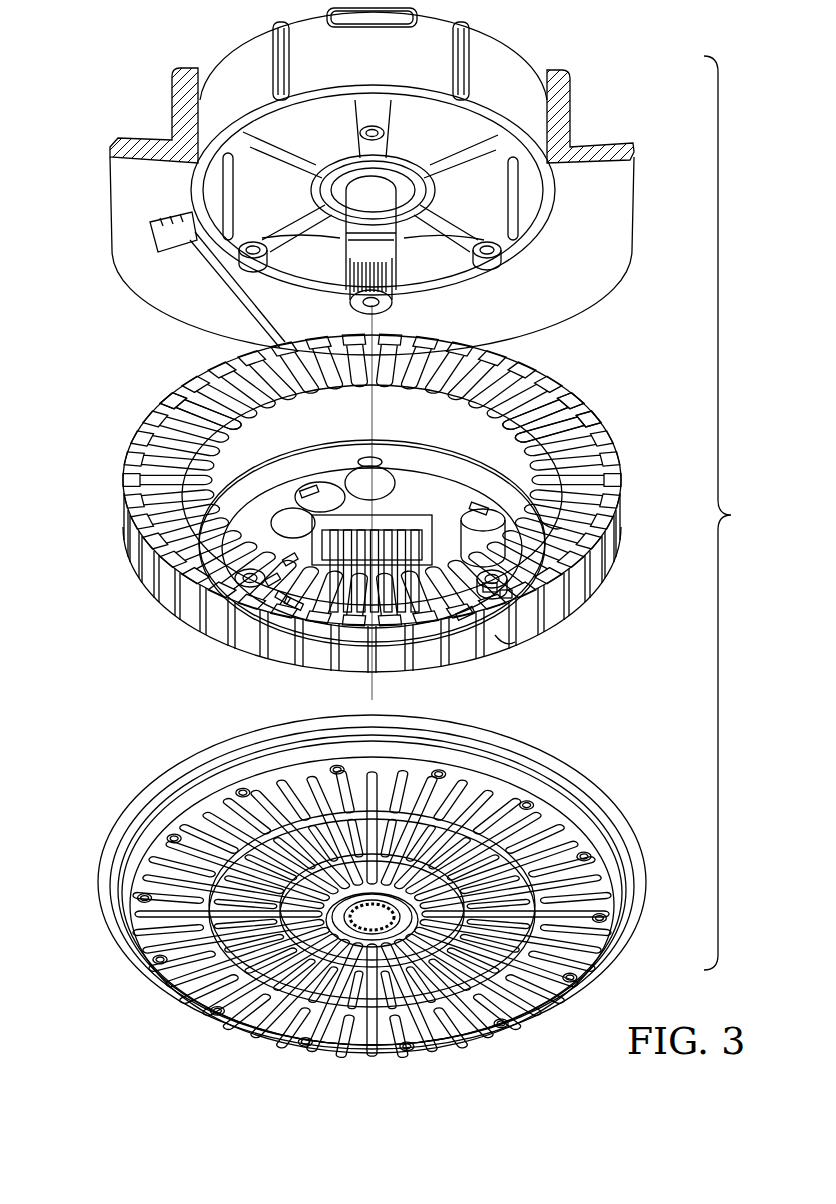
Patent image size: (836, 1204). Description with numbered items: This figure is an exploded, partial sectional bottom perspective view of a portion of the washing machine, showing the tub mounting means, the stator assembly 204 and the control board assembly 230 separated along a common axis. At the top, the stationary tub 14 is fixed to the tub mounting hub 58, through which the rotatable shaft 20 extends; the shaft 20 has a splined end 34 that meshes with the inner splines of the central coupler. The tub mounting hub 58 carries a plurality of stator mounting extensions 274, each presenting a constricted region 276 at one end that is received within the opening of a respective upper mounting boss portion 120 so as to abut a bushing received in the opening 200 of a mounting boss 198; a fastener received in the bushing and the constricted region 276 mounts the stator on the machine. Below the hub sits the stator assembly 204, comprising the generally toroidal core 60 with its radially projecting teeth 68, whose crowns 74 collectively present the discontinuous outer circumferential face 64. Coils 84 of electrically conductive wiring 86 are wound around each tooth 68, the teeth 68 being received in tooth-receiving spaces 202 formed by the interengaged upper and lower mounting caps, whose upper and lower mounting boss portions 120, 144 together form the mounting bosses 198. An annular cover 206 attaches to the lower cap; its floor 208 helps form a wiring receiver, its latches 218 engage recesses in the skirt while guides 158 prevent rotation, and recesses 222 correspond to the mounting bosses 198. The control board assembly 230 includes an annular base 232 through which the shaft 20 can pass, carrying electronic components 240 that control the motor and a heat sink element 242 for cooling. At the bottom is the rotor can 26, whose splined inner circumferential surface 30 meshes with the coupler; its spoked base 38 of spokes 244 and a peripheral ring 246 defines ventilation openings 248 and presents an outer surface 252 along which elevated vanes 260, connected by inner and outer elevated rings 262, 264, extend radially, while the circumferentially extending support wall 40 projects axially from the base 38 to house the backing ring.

The tub 14 is at (612, 195).
The shaft 20 is at (380, 218).
The rotor can 26 is at (653, 787).
The splined inner circumferential surface 30 is at (356, 925).
The splined end 34 is at (378, 285).
The spoked base 38 is at (603, 937).
The support wall 40 is at (600, 778).
The tub mounting hub 58 is at (492, 62).
The core 60 is at (118, 454).
The outer circumferential face 64 is at (540, 397).
The teeth 68 is at (568, 409).
The crown 74 is at (588, 428).
The coils 84 is at (552, 525).
The wiring 86 is at (223, 277).
The upper mounting boss portions 120 is at (487, 550).
The lower mounting boss portions 144 is at (494, 585).
The guides 158 is at (323, 620).
The mounting bosses 198 is at (225, 559).
The opening 200 is at (529, 641).
The tooth-receiving spaces 202 is at (213, 384).
The stator assembly 204 is at (616, 659).
The cover 206 is at (247, 543).
The floor 208 is at (287, 488).
The latches 218 is at (340, 617).
The recesses 222 is at (273, 580).
The control board assembly 230 is at (487, 527).
The base 232 is at (386, 488).
The electronic components 240 is at (290, 560).
The heat sink element 242 is at (283, 597).
The spokes 244 is at (330, 990).
The peripheral ring 246 is at (168, 958).
The ventilation openings 248 is at (335, 812).
The outer surface 252 is at (255, 812).
The vanes 260 is at (222, 847).
The inner elevated ring 262 is at (210, 898).
The outer elevated ring 264 is at (165, 913).
The stator mounting extensions 274 is at (503, 215).
The constricted region 276 is at (488, 248).